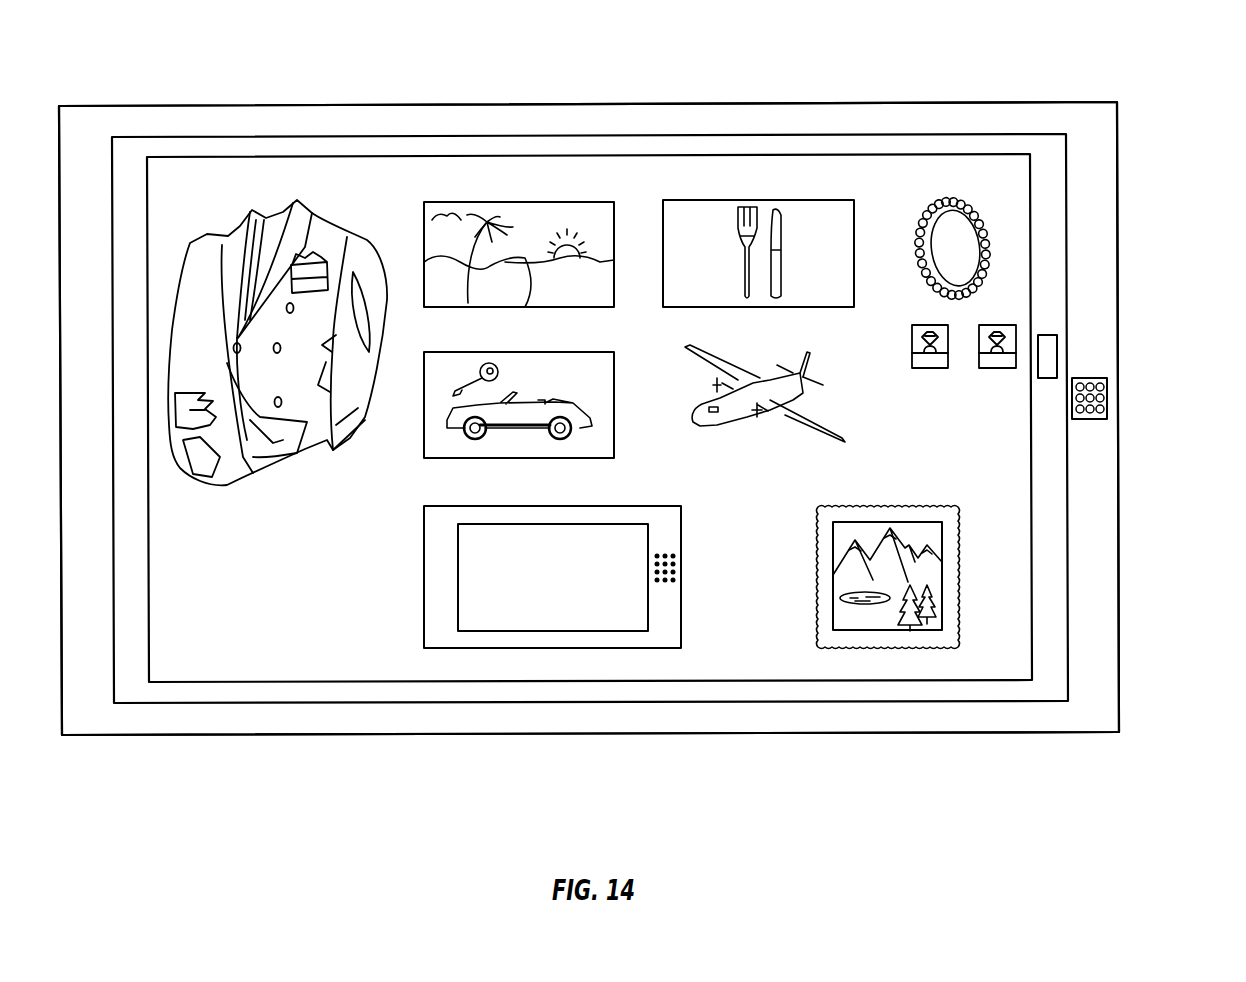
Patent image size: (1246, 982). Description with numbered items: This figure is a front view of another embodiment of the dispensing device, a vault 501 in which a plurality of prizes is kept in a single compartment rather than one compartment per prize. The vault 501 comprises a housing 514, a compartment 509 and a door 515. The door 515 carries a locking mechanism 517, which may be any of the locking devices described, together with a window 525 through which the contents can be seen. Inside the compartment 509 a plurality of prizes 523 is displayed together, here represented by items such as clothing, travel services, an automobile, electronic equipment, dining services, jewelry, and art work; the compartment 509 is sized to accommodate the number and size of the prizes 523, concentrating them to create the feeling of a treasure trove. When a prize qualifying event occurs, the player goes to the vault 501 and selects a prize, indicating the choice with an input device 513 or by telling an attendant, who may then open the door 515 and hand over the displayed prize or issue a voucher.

The vault 501 is at (930, 100).
The housing 514 is at (1092, 117).
The door 515 is at (1068, 183).
The compartment 509 is at (1010, 297).
The window 525 is at (1010, 243).
The locking mechanism 517 is at (1058, 347).
The input device 513 is at (1107, 388).
The prizes 523 is at (340, 236).